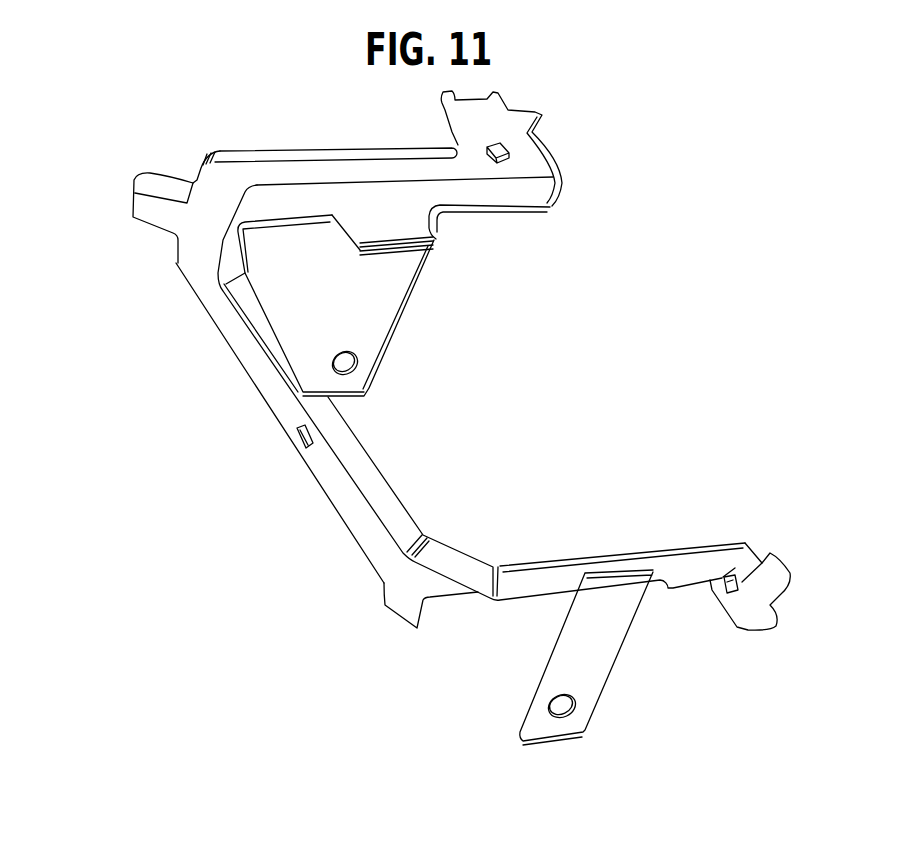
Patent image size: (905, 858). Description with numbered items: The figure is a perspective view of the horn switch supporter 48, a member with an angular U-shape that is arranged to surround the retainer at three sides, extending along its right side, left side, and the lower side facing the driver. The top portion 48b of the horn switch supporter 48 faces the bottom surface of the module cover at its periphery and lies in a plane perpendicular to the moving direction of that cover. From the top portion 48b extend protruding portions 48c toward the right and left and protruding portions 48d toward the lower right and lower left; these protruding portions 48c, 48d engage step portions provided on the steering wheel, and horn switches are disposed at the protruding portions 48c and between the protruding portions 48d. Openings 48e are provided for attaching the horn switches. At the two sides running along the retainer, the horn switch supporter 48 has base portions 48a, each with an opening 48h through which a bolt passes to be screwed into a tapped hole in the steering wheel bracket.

The horn switch supporter 48 is at (200, 362).
The base portions 48a is at (385, 300).
The top portion 48b is at (233, 173).
The protruding portions 48c is at (465, 117).
The protruding portions 48d is at (138, 205).
The openings 48e is at (512, 150).
The openings 48h is at (360, 363).